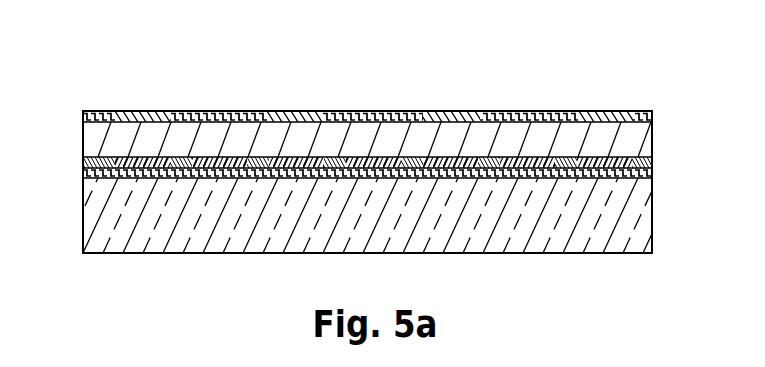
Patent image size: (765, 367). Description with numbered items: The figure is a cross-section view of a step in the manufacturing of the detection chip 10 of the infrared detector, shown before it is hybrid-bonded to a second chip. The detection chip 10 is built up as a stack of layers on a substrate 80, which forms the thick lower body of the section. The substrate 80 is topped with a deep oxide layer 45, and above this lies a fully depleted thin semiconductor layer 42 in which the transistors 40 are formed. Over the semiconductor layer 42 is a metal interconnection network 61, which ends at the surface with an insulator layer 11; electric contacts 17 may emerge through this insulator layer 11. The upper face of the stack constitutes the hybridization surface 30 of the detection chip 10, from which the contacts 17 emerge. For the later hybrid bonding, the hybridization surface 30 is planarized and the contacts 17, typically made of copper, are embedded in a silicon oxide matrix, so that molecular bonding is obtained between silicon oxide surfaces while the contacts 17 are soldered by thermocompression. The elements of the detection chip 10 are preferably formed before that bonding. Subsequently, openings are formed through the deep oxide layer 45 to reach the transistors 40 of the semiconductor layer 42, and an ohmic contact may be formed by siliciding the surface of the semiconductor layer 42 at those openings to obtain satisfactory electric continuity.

The detection chip 10 is at (422, 70).
The insulator layer 11 is at (352, 110).
The contacts 17 is at (615, 112).
The hybridization surface 30 is at (191, 78).
The transistors 40 is at (215, 165).
The fully depleted thin semiconductor layer 42 is at (565, 163).
The deep oxide layer 45 is at (137, 174).
The metal interconnection network 61 is at (642, 140).
The substrate 80 is at (637, 215).